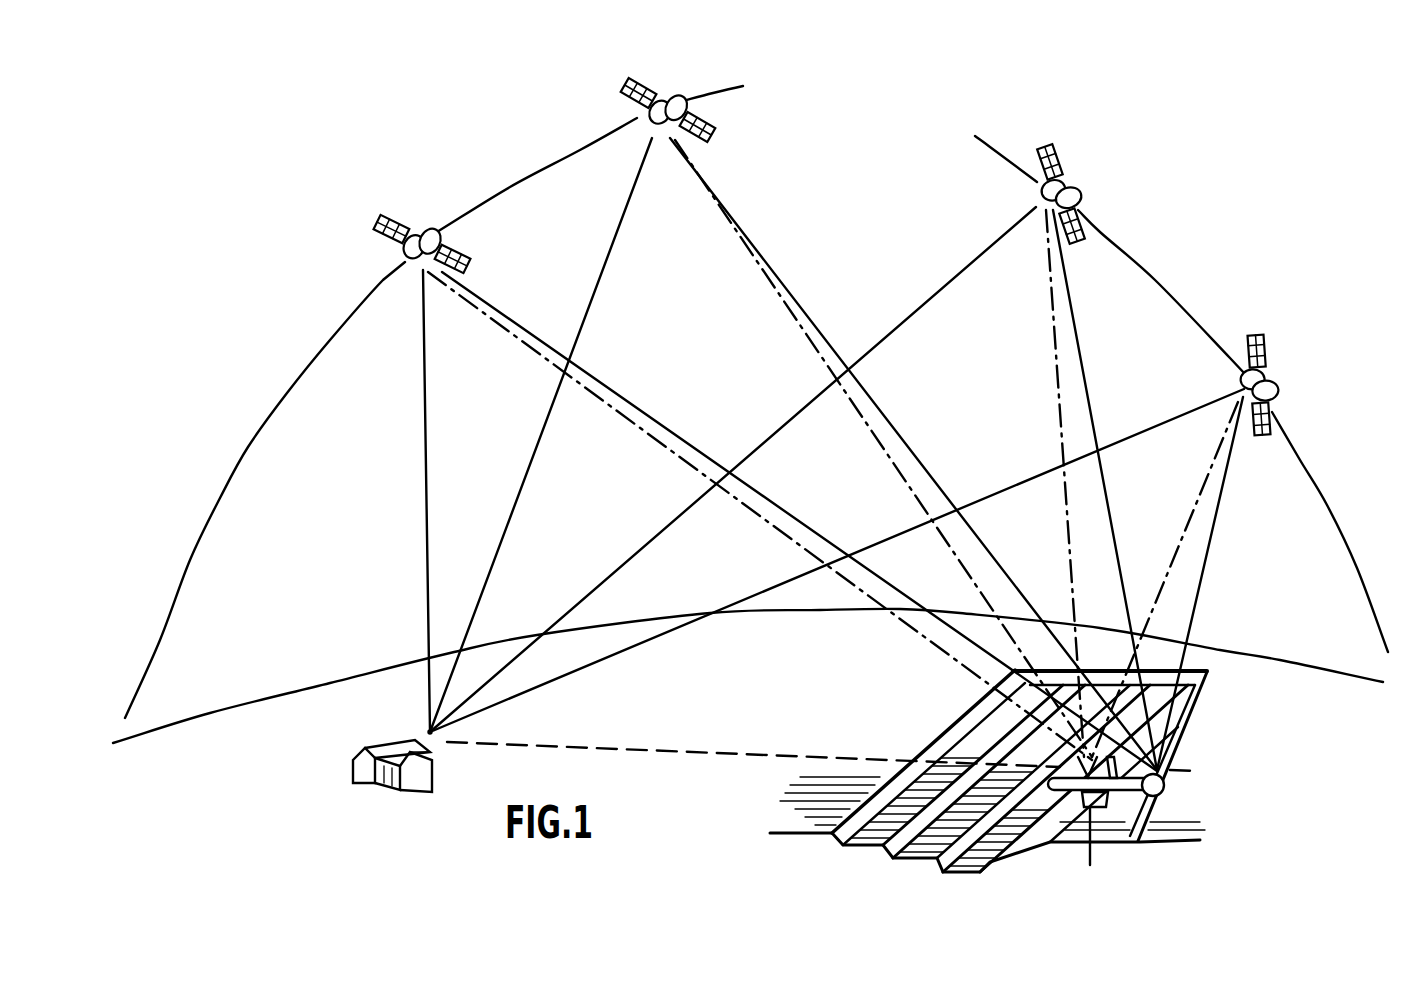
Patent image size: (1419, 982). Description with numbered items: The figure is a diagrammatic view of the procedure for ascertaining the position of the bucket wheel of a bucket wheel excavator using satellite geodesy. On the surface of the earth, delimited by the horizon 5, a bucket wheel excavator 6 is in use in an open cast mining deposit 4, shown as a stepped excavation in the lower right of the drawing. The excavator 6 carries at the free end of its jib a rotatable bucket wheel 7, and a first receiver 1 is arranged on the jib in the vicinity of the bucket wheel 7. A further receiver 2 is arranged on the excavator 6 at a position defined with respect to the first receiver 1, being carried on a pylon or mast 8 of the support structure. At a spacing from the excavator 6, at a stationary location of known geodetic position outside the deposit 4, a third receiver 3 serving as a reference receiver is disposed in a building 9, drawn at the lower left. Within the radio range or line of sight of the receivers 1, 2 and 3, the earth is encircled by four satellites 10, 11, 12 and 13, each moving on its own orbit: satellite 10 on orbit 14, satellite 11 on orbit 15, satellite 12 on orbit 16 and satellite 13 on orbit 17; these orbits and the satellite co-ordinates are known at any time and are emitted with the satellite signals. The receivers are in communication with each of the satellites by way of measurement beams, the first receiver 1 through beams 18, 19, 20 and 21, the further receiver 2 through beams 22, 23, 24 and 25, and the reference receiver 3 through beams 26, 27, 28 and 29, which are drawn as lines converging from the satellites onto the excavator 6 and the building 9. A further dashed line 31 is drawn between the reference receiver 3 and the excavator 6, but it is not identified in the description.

The first receiver 1 is at (1168, 773).
The further receiver 2 is at (1186, 745).
The third receiver 3 is at (424, 731).
The open cast mining deposit 4 is at (907, 863).
The horizon 5 is at (1331, 672).
The bucket wheel excavator 6 is at (1093, 846).
The bucket wheel 7 is at (1166, 790).
The pylon or mast 8 is at (1148, 800).
The building 9 is at (362, 790).
The satellite 10 is at (1274, 378).
The satellite 11 is at (1073, 174).
The satellite 12 is at (668, 97).
The satellite 13 is at (422, 228).
The orbit 14 is at (1329, 506).
The orbit 15 is at (1152, 277).
The orbit 16 is at (535, 163).
The orbit 17 is at (247, 449).
The measurement beam 18 is at (1212, 540).
The measurement beam 19 is at (1075, 339).
The measurement beam 20 is at (737, 214).
The measurement beam 21 is at (626, 390).
The measurement beam 22 is at (1183, 532).
The measurement beam 23 is at (1050, 346).
The measurement beam 24 is at (870, 442).
The measurement beam 25 is at (662, 456).
The measurement beam 26 is at (1162, 405).
The measurement beam 27 is at (941, 287).
The measurement beam 28 is at (613, 233).
The measurement beam 29 is at (421, 425).
The data link from reference station to receiver 31 is at (695, 753).